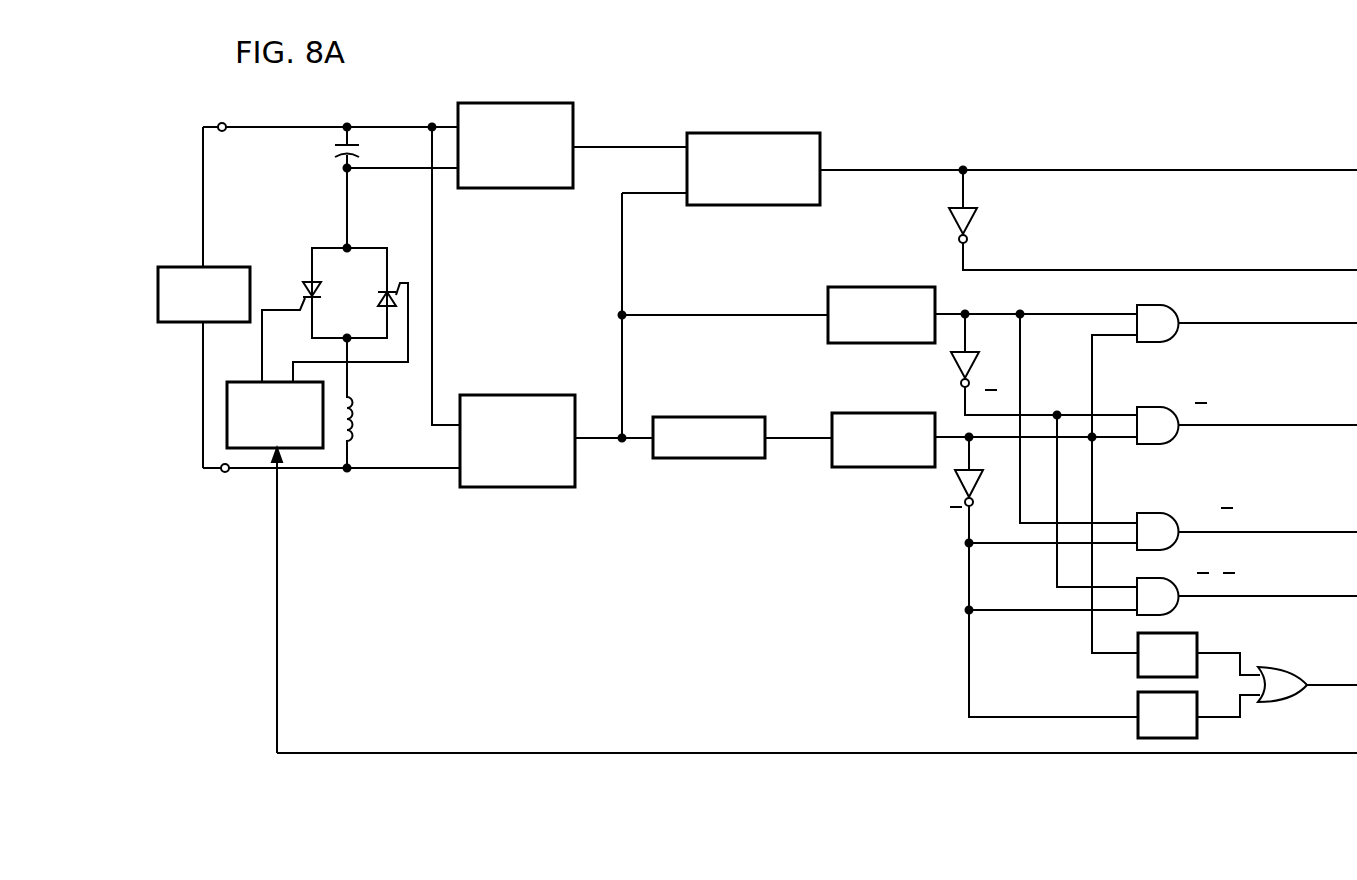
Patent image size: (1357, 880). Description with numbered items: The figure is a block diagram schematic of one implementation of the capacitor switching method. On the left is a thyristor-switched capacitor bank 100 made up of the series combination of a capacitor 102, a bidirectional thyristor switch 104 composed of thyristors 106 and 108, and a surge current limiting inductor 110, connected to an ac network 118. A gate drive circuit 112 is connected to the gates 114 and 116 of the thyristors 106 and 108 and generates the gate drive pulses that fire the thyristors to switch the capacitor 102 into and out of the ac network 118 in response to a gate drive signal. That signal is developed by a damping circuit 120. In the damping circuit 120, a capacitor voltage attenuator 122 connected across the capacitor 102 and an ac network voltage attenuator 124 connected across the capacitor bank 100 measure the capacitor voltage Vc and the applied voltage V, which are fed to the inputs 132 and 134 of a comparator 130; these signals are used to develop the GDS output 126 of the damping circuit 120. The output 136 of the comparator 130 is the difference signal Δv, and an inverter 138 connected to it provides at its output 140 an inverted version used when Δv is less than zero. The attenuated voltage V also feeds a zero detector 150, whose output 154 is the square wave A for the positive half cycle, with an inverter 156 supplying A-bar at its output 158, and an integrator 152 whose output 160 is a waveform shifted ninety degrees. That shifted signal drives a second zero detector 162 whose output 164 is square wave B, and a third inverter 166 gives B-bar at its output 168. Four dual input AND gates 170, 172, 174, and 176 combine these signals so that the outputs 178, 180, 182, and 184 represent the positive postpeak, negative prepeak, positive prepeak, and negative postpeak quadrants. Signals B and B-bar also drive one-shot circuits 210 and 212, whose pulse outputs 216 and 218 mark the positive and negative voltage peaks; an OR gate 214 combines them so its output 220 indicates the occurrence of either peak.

The thyristor-switched capacitor bank 100 is at (297, 209).
The capacitor 102 is at (333, 151).
The bidirectional thyristor switch 104 is at (325, 293).
The thyristor 106 is at (303, 288).
The thyristor 108 is at (379, 301).
The surge current limiting inductor 110 is at (358, 402).
The gate drive circuit 112 is at (252, 382).
The gate 114 is at (262, 356).
The gate 116 is at (310, 362).
The ac network 118 is at (192, 267).
The damping circuit 120 is at (877, 554).
The capacitor voltage attenuator 122 is at (514, 103).
The ac network voltage attenuator 124 is at (501, 395).
The GDS output 126 is at (401, 753).
The comparator 130 is at (770, 110).
The comparator input 132 is at (683, 144).
The comparator input 134 is at (683, 197).
The comparator output 136 is at (866, 152).
The inverter 138 is at (950, 226).
The inverter output 140 is at (988, 250).
The zero detector 150 is at (866, 287).
The integrator 152 is at (691, 417).
The zero detector output 154 is at (975, 313).
The inverter 156 is at (951, 366).
The inverter output 158 is at (964, 402).
The integrator output 160 is at (803, 439).
The second zero detector 162 is at (873, 413).
The zero detector output 164 is at (978, 447).
The third inverter 166 is at (955, 488).
The inverter output 168 is at (983, 503).
The AND gate 170 is at (1151, 305).
The AND gate 172 is at (1158, 407).
The AND gate 174 is at (1161, 513).
The AND gate 176 is at (1169, 578).
The AND gate output 178 is at (1232, 327).
The AND gate output 180 is at (1243, 430).
The AND gate output 182 is at (1243, 533).
The AND gate output 184 is at (1269, 598).
The one-shot circuit 210 is at (1170, 633).
The one-shot circuit 212 is at (1190, 692).
The dual input OR gate 214 is at (1278, 668).
The one-shot output 216 is at (1222, 633).
The one-shot output 218 is at (1212, 718).
The OR gate output 220 is at (1320, 667).